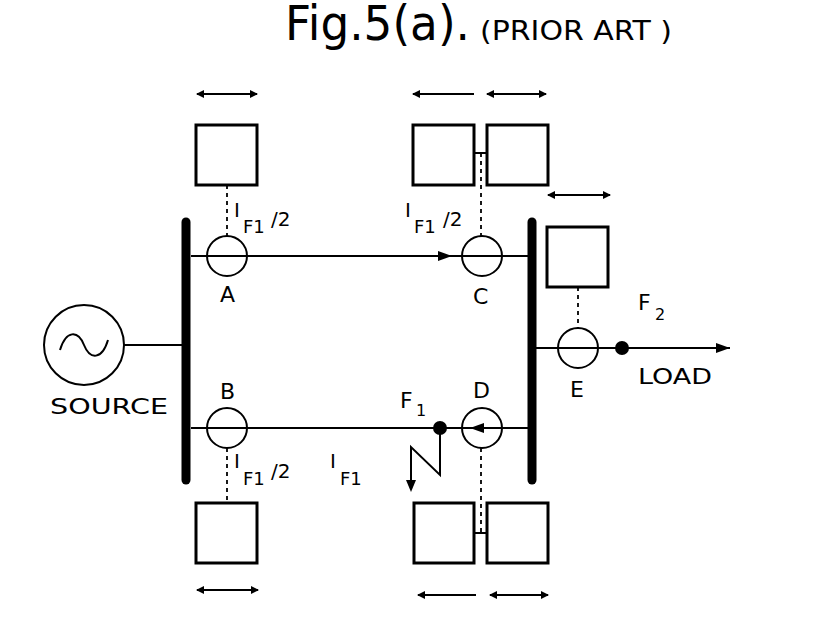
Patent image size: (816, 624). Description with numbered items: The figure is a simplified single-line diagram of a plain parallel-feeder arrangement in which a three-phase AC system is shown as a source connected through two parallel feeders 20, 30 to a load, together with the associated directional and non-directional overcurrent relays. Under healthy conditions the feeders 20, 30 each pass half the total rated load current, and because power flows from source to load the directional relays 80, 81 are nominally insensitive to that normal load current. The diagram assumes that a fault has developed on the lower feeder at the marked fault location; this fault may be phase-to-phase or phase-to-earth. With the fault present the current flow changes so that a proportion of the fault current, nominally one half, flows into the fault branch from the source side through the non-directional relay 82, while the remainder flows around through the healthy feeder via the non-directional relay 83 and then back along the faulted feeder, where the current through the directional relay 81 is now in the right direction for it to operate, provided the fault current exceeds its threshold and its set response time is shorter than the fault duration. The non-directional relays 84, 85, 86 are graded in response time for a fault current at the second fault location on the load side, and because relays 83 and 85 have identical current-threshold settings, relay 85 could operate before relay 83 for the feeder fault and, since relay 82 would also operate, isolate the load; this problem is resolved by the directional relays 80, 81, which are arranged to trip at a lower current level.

The feeder 20 is at (350, 259).
The feeder 30 is at (322, 425).
The directional relay 80 is at (413, 133).
The directional relay 81 is at (413, 537).
The non-directional relay 82 is at (196, 534).
The non-directional relay 83 is at (549, 510).
The non-directional relay 84 is at (196, 136).
The non-directional relay 85 is at (548, 132).
The non-directional relay 86 is at (608, 243).